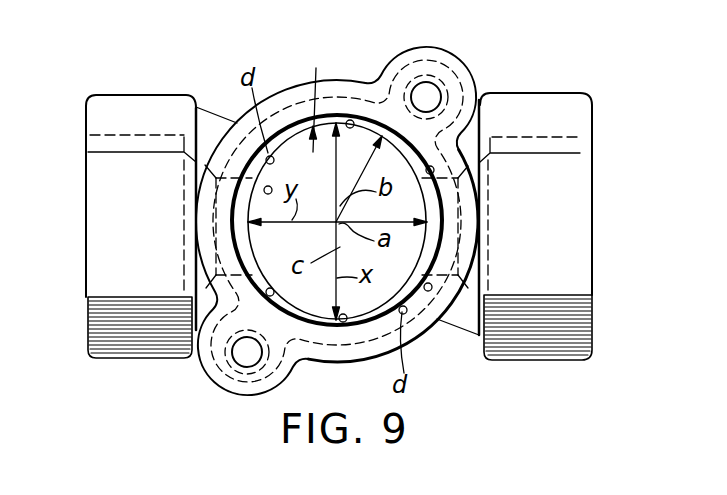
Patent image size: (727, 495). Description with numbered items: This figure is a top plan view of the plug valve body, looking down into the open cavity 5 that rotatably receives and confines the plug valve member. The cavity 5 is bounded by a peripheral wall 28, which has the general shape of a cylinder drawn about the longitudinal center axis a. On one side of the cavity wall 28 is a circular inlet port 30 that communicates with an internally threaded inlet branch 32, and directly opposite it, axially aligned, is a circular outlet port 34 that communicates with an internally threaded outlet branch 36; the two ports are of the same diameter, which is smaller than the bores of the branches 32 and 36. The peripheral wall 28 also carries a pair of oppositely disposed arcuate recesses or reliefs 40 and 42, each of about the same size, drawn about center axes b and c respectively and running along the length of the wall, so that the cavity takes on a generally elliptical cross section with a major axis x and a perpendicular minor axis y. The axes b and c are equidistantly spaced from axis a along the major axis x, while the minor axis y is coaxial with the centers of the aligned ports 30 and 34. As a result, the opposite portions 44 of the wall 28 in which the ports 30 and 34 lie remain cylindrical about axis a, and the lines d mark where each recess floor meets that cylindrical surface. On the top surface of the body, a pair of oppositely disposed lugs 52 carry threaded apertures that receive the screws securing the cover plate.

The cavity 5 is at (314, 98).
The peripheral wall 28 is at (265, 187).
The inlet port 30 is at (262, 250).
The inlet branch 32 is at (148, 100).
The outlet port 34 is at (422, 305).
The outlet branch 36 is at (572, 115).
The arcuate recess 40 is at (353, 122).
The arcuate recess 42 is at (318, 313).
The opposite portions of the peripheral cavity wall 44 is at (410, 172).
The lug 52 is at (455, 52).